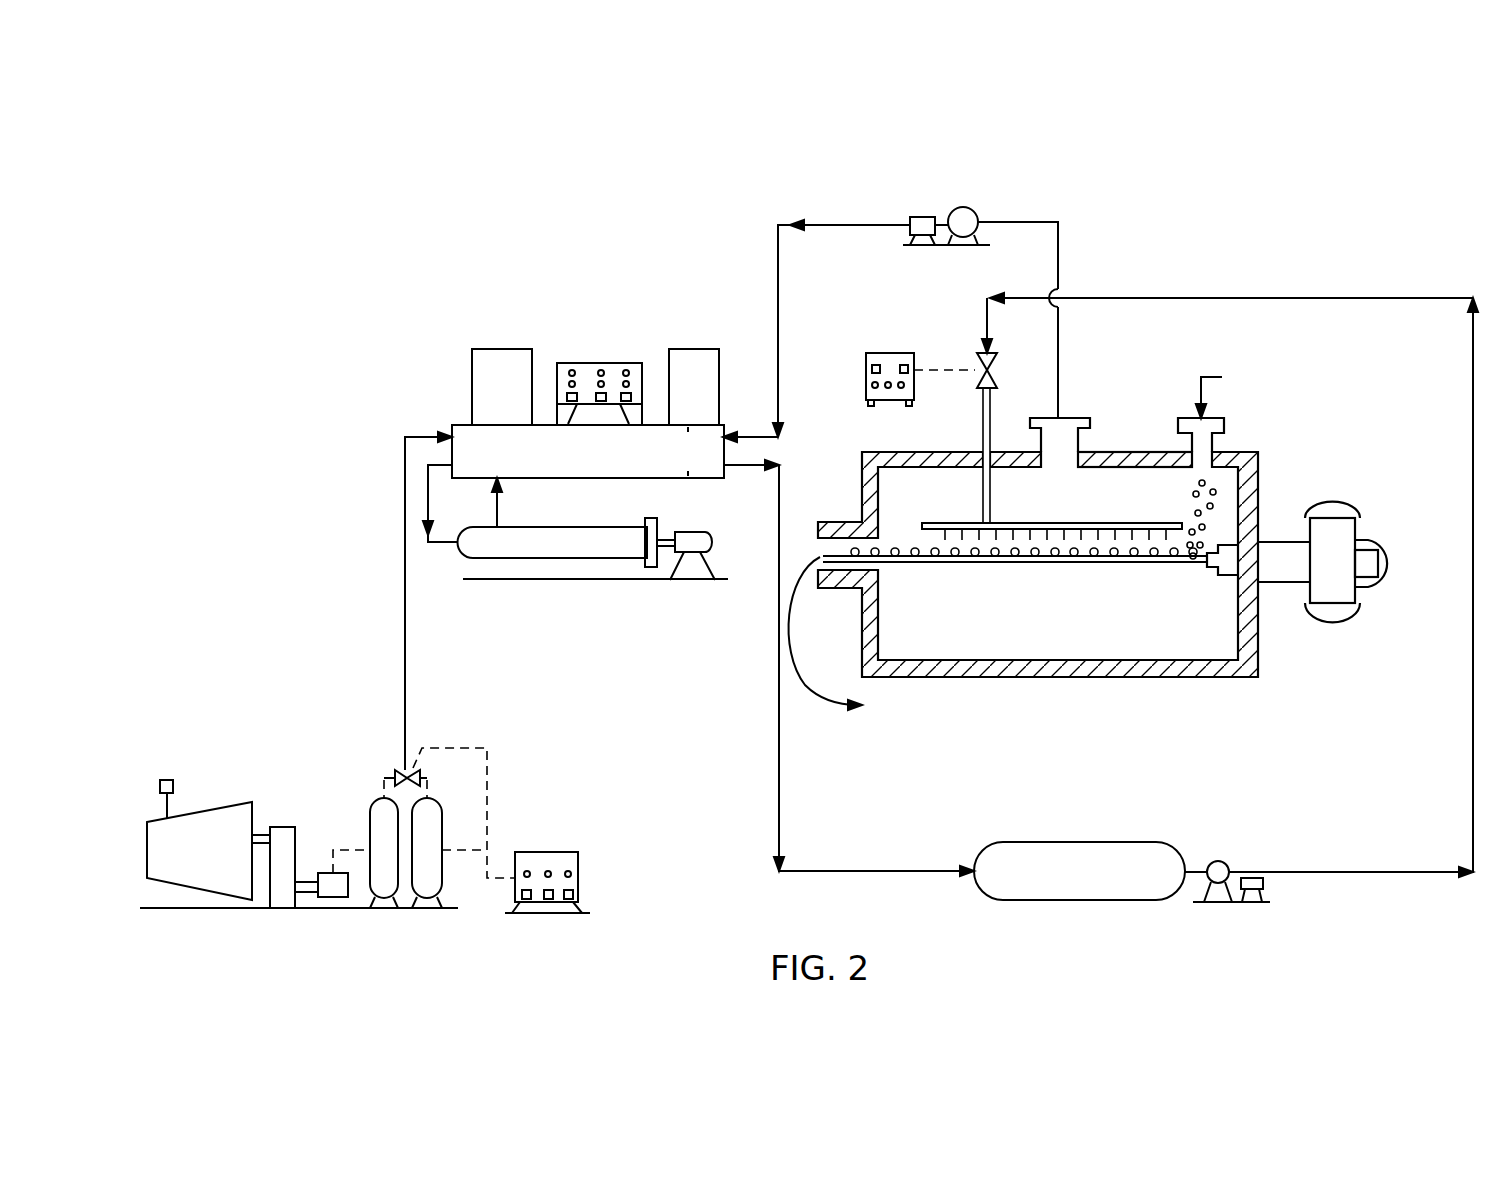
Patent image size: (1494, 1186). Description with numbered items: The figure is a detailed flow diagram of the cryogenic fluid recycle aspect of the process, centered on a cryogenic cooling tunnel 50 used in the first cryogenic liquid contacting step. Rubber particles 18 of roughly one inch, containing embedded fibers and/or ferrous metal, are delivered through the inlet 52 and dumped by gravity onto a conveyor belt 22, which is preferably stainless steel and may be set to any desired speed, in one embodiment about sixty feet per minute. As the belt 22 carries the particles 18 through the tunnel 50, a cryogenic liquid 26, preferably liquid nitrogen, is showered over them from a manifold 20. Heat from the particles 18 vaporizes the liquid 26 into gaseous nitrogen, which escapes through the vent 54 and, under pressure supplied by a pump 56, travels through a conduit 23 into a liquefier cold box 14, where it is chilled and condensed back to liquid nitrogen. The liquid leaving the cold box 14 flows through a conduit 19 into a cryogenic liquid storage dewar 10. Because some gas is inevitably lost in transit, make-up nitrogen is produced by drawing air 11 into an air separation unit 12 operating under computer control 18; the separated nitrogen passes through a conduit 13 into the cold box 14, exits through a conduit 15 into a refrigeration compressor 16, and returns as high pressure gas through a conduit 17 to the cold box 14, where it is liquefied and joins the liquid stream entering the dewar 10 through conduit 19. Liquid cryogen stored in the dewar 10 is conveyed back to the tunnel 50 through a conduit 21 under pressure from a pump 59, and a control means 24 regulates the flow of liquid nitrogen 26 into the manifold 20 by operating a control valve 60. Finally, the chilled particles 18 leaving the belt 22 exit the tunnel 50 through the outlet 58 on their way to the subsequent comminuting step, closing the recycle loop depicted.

The cryogenic liquid storage dewar 10 is at (1098, 881).
The air 11 is at (167, 779).
The air separation unit 12 is at (286, 798).
The conduit 13 is at (405, 642).
The liquefier cold box 14 is at (614, 462).
The conduit 15 is at (440, 547).
The refrigeration compressor 16 is at (584, 551).
The conduit 17 is at (500, 512).
The rubber particles 18 is at (516, 843).
The conduit 19 is at (779, 749).
The manifold 20 is at (1007, 522).
The conduit 21 is at (1372, 870).
The conveyor belt 22 is at (1082, 563).
The conduit 23 is at (1060, 380).
The control means 24 is at (926, 346).
The cryogenic liquid 26 is at (927, 538).
The cryogenic cooling tunnel 50 is at (1160, 684).
The inlet 52 is at (1212, 443).
The vent 54 is at (1092, 441).
The pump 56 is at (970, 215).
The outlet 58 is at (823, 547).
The pump 59 is at (1230, 866).
The control valve 60 is at (991, 370).